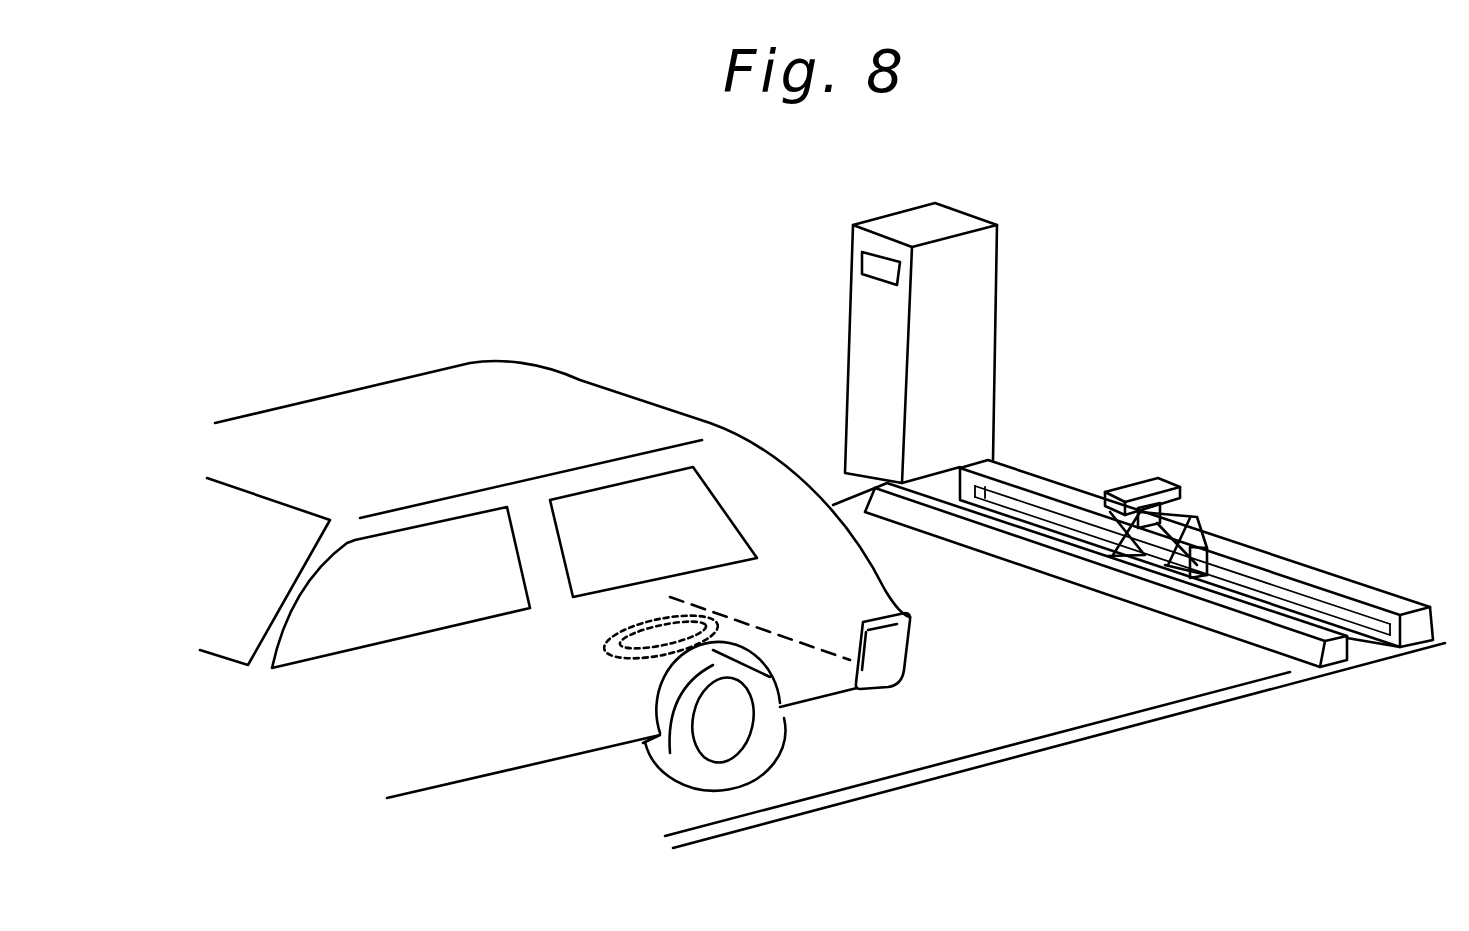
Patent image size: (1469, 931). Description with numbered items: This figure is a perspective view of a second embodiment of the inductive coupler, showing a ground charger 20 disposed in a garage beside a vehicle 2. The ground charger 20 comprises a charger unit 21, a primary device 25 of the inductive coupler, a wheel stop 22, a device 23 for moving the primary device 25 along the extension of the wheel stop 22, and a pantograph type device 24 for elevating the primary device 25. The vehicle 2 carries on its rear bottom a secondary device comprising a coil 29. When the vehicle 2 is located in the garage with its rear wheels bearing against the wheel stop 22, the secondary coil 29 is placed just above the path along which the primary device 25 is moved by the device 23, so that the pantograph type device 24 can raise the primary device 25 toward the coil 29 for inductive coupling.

The vehicle 2 is at (475, 375).
The coil 29 is at (672, 614).
The ground charger 20 is at (1133, 454).
The charger unit 21 is at (978, 353).
The wheel stop 22 is at (1337, 653).
The device for moving the primary device 23 is at (1363, 590).
The pantograph type device 24 is at (1197, 528).
The primary device 25 is at (1177, 500).